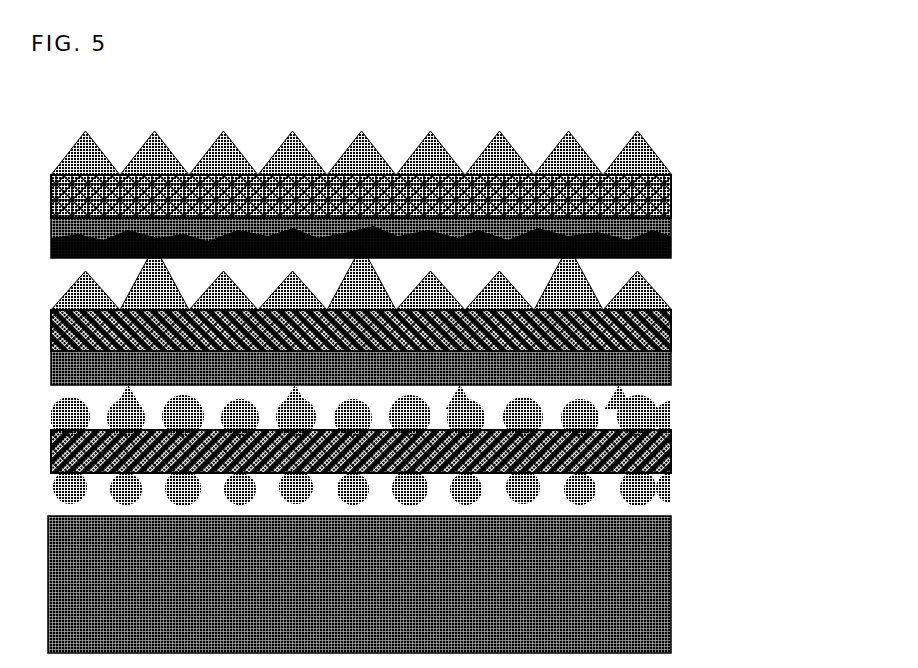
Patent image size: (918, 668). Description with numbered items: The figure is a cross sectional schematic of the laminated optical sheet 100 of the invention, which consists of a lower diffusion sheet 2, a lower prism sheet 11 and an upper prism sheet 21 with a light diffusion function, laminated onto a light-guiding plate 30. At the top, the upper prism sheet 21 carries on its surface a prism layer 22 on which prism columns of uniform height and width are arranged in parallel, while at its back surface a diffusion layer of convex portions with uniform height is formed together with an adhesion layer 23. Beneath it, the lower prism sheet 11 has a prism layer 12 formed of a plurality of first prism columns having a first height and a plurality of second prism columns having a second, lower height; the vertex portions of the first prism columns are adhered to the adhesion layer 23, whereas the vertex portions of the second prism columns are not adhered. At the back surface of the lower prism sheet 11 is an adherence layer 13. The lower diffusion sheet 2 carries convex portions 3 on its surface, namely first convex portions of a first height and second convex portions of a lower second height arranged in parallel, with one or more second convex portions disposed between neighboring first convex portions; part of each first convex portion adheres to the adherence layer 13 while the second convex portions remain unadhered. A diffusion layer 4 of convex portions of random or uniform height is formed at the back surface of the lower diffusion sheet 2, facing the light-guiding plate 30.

The laminated optical sheet 100 is at (848, 99).
The prism layer 22 is at (677, 121).
The upper prism sheet 21 is at (677, 169).
The adhesion layer 23 is at (677, 212).
The prism layer 12 is at (677, 262).
The lower prism sheet 11 is at (663, 327).
The adherence layer 13 is at (677, 343).
The convex portion 3 is at (677, 381).
The lower diffusion sheet 2 is at (663, 443).
The diffusion layer 4 is at (677, 468).
The light-guiding plate 30 is at (640, 593).